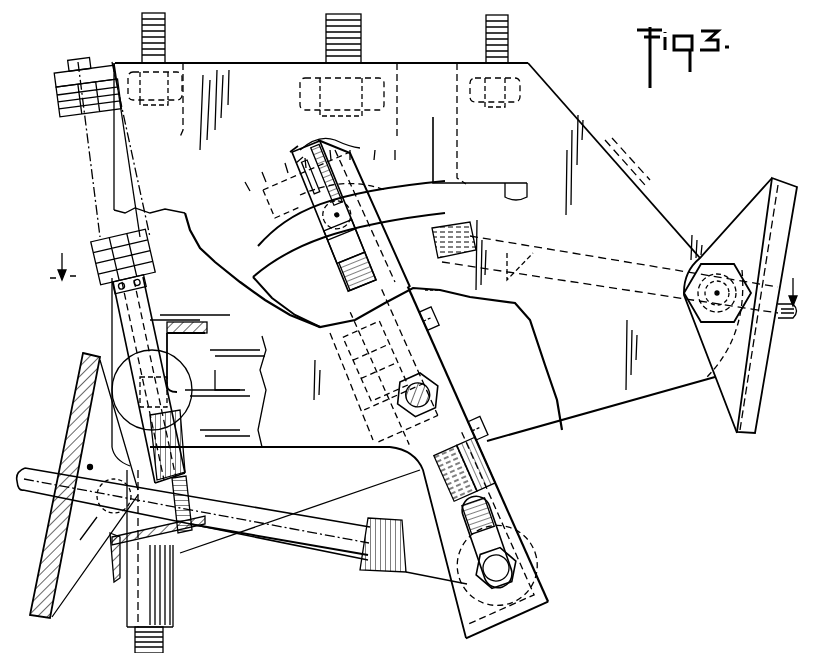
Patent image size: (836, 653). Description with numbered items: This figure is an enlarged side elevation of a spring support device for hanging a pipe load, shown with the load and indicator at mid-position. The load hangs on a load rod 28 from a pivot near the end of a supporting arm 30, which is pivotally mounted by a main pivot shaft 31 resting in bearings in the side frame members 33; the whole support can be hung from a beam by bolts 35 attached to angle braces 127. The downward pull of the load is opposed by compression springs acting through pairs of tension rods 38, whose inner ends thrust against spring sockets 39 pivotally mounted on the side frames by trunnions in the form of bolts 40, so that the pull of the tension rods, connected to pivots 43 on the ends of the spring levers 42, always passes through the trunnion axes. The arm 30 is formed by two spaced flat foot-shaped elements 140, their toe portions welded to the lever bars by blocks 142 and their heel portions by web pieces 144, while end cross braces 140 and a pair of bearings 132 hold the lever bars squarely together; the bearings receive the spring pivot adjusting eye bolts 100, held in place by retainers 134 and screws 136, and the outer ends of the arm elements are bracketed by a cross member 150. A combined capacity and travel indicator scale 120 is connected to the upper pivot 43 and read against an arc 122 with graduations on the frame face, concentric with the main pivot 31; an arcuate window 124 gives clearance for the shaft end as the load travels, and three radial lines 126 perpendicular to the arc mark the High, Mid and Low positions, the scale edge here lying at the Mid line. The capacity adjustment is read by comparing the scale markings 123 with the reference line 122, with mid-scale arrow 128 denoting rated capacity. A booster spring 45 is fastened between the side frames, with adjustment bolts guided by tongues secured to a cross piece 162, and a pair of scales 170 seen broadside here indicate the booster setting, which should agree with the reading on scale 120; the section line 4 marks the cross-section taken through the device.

The supporting arm 30 is at (246, 455).
The side frame members 33 is at (585, 128).
The bolts 35 is at (166, 28).
The angle braces 127 is at (192, 80).
The booster spring 45 is at (66, 119).
The scales 170 is at (168, 477).
The cross piece 162 is at (118, 573).
The load rod 28 is at (165, 640).
The spring sockets 39 is at (43, 534).
The trunnions (bolts) 40 is at (700, 318).
The tension rods 38 is at (607, 262).
The section line 4- 4 is at (423, 298).
The cross member 150 is at (197, 322).
The radial lines 126 is at (437, 116).
The arcuate window 124 is at (428, 196).
The scale markings 123 is at (296, 165).
The flat elements / end cross braces 140 is at (276, 204).
The bearings 132 is at (365, 376).
The retainers 134 is at (443, 315).
The screws 136 is at (448, 327).
The main pivot shaft 31 is at (430, 389).
The blocks 142 is at (498, 462).
The spring levers 42 is at (403, 230).
The pivots 43 is at (551, 546).
The spring pivot adjusting eye bolts 100 is at (356, 288).
The web pieces 144 is at (433, 292).
The arc 122 is at (399, 180).
The arrow 128 is at (348, 183).
The capacity and travel indicator scale 120 is at (294, 158).